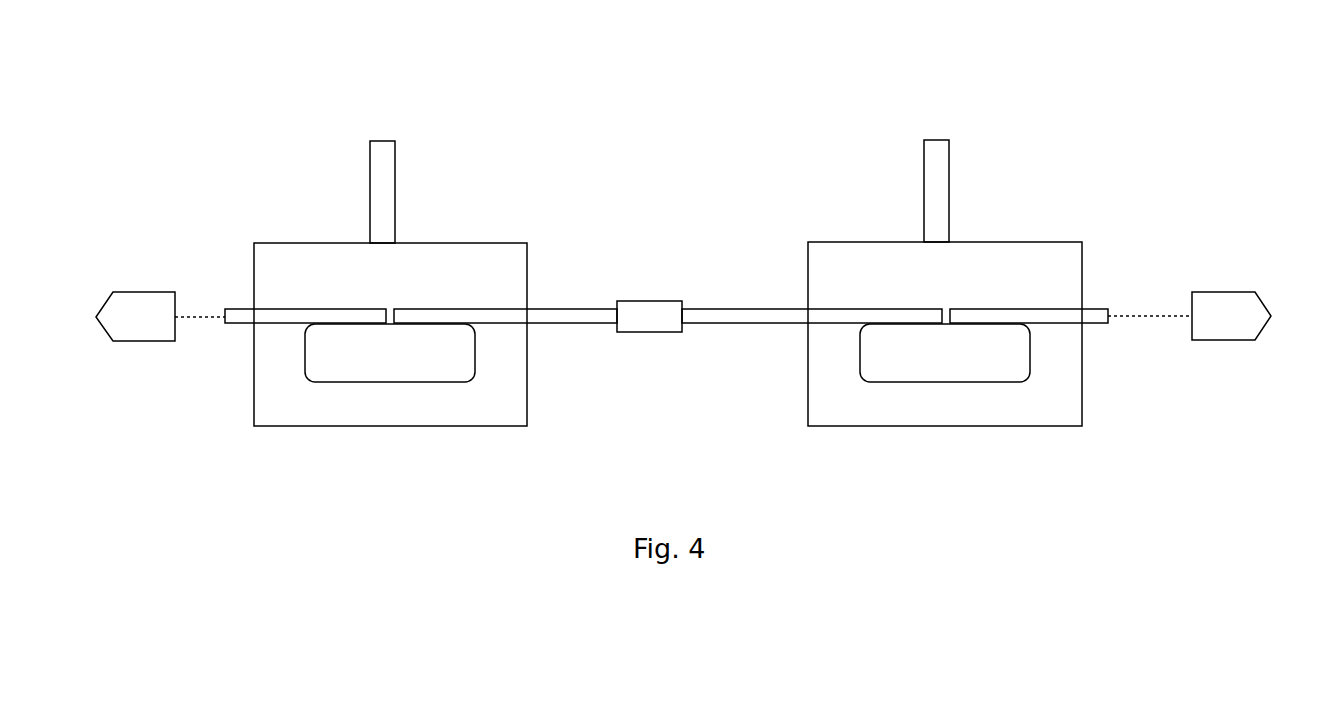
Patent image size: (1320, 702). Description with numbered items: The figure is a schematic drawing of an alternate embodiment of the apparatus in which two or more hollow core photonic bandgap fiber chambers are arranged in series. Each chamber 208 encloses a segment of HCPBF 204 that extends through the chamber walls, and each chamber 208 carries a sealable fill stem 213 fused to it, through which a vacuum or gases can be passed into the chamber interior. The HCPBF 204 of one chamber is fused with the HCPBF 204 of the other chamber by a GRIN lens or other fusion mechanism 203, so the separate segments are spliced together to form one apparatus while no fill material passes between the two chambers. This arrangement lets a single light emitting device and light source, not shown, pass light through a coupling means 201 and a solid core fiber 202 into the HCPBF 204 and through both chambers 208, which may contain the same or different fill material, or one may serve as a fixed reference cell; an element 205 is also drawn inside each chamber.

The coupling means 201 is at (141, 291).
The solid core fiber 202 is at (198, 313).
The fusion mechanism 203 is at (642, 302).
The HCPBF 204 is at (541, 308).
The light source / detector unit 205 is at (366, 367).
The chamber 208 is at (475, 243).
The sealable fill stem 213 is at (386, 138).